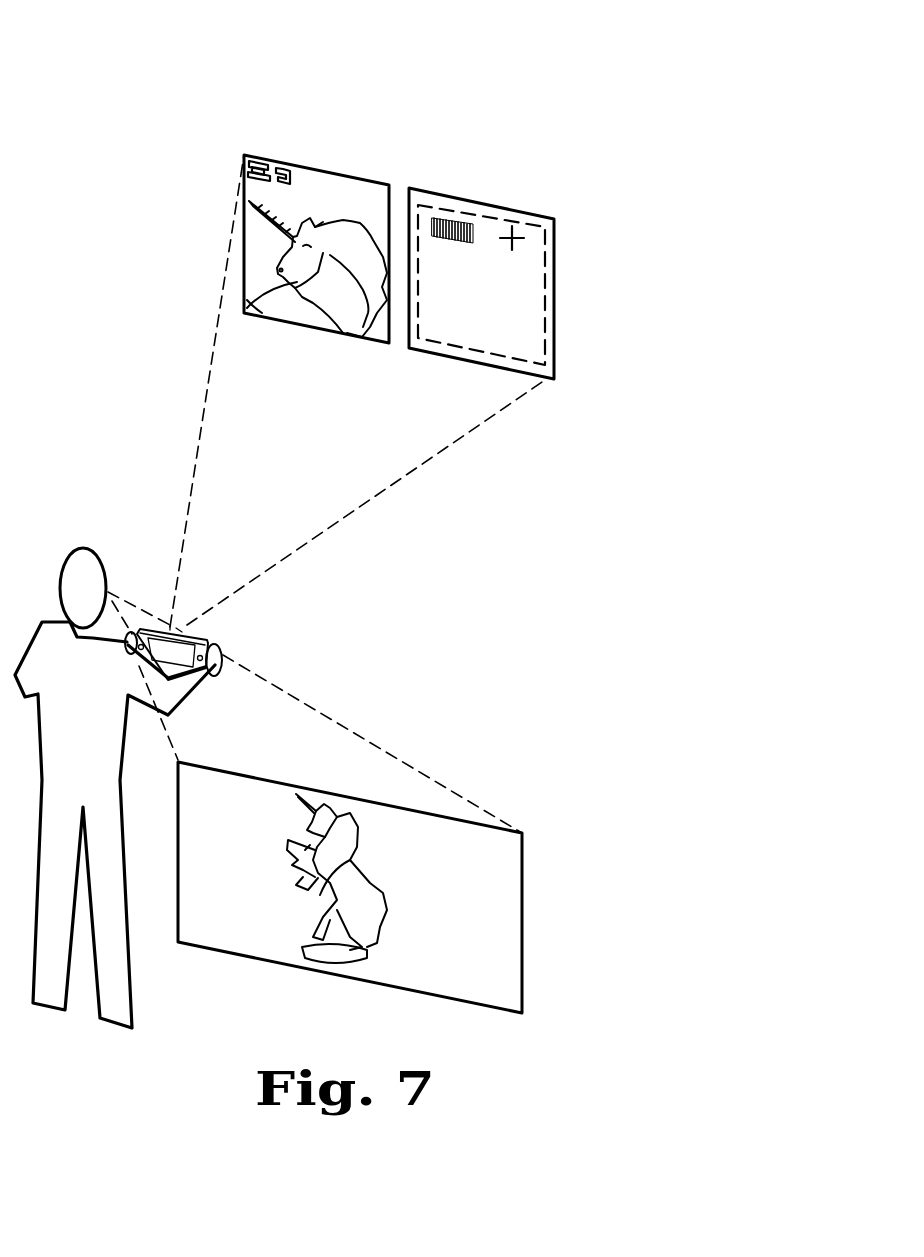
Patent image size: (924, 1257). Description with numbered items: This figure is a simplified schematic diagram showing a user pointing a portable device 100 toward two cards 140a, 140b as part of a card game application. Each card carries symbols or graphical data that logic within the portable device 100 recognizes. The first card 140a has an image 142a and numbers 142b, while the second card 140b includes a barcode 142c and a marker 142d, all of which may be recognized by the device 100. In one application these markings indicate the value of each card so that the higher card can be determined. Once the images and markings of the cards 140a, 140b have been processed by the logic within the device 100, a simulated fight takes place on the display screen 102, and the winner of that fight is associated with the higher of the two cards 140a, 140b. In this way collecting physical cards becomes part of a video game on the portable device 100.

The portable device 100 is at (217, 642).
The display screen 102 is at (517, 864).
The card 140a is at (390, 345).
The card 140b is at (547, 385).
The image 142a is at (280, 257).
The numbers 142b is at (270, 157).
The barcode 142c is at (450, 222).
The marker 142d is at (514, 238).